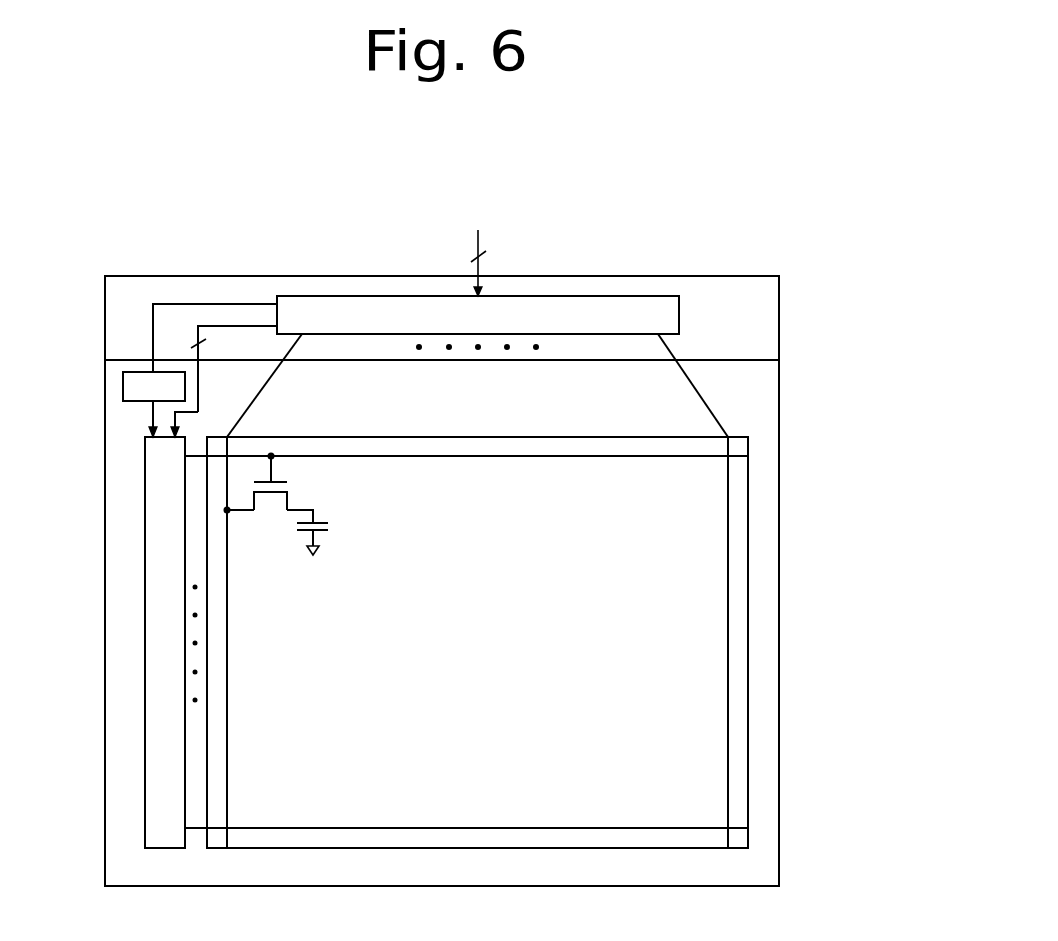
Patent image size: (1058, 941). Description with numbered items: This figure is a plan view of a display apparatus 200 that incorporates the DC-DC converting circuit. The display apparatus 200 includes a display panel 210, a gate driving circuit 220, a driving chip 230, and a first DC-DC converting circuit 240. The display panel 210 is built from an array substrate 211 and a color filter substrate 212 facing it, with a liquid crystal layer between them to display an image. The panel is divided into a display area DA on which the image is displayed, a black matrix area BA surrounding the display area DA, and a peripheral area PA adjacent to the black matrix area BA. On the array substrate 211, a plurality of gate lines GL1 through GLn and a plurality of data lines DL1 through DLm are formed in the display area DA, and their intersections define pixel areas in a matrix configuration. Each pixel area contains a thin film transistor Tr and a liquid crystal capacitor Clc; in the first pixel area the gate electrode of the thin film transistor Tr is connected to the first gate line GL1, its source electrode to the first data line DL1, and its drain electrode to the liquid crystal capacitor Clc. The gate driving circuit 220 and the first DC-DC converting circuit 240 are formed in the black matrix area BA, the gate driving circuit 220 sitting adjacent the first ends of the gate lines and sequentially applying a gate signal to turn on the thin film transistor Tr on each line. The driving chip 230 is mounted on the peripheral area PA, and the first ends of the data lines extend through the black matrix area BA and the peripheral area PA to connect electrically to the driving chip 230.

The display apparatus 200 is at (735, 167).
The display panel 210 is at (869, 305).
The array substrate 211 is at (779, 313).
The color filter substrate 212 is at (745, 360).
The driving chip 230 is at (613, 296).
The first DC-DC converting circuit 240 is at (123, 386).
The gate driving circuit 220 is at (145, 582).
The peripheral area PA is at (167, 288).
The black matrix area BA is at (122, 757).
The display area DA is at (704, 546).
The first data line DL1 is at (229, 641).
The data line DLm is at (728, 641).
The first gate line GL1 is at (467, 457).
The gate line GLn is at (464, 828).
The thin film transistor Tr is at (292, 486).
The liquid crystal capacitor Clc is at (333, 527).